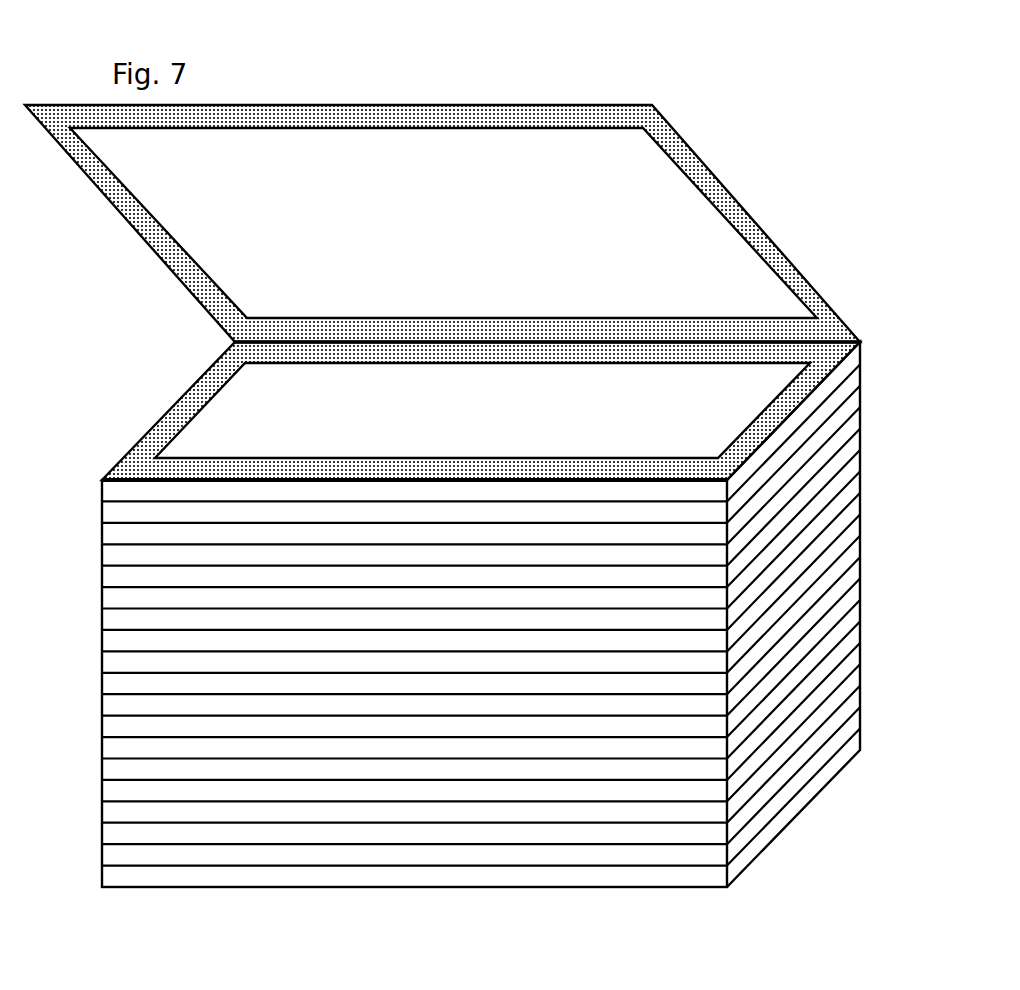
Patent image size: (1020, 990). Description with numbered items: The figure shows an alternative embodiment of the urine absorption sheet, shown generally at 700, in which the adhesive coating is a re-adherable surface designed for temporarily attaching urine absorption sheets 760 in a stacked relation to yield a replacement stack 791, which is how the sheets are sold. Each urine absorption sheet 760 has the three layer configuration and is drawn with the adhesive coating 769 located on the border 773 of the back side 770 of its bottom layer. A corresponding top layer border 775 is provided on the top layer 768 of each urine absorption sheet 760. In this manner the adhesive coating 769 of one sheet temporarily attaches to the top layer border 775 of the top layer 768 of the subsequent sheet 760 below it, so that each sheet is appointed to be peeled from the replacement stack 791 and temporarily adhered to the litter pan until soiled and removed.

The urine absorption sheet embodiment 700 is at (394, 84).
The urine absorption sheet 760 is at (586, 100).
The back side 770 is at (638, 147).
The border 773 is at (712, 190).
The adhesive coating 769 is at (797, 287).
The top layer border 775 is at (820, 370).
The top layer 768 is at (232, 390).
The replacement stack 791 is at (662, 865).